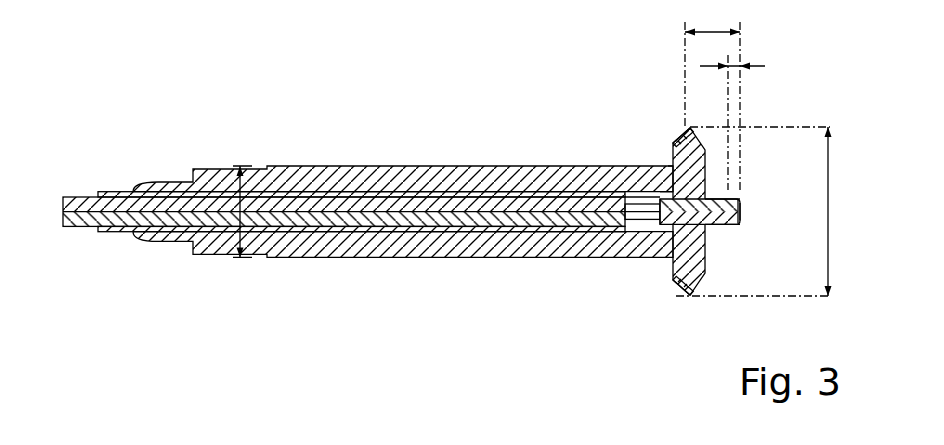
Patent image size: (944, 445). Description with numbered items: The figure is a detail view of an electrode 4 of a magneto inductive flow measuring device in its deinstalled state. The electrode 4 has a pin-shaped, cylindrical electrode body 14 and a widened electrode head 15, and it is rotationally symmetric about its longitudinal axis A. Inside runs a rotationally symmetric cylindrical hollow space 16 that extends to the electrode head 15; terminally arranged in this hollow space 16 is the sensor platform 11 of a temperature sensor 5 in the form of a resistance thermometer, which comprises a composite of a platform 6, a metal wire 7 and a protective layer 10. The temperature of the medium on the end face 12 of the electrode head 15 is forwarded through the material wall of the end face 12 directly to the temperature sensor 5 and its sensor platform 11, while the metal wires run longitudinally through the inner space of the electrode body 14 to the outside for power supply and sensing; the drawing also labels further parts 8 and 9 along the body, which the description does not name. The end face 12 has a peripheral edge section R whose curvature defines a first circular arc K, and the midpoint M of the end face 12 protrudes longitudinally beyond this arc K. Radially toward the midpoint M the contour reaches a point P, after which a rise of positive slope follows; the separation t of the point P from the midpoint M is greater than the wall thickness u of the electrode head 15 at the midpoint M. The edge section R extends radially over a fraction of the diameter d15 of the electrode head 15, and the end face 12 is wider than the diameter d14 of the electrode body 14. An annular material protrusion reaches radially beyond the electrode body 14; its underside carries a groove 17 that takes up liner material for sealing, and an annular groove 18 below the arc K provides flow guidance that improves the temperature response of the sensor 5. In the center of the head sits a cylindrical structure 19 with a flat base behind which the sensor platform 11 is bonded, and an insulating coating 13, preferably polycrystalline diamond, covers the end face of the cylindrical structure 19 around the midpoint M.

The electrode 4 is at (448, 164).
The temperature sensor 5 is at (368, 211).
The platform 6 is at (742, 229).
The metal wire 7 is at (732, 192).
The inner tube 8 is at (372, 229).
The rod / inner conductor 9 is at (321, 209).
The protective layer 10 is at (660, 213).
The sensor platform 11 is at (640, 220).
The end face 12 is at (746, 193).
The insulating coating 13 is at (748, 226).
The electrode body 14 is at (508, 173).
The electrode head 15 is at (681, 134).
The hollow space 16 is at (645, 196).
The groove 17 is at (670, 160).
The annular groove 18 is at (668, 193).
The cylindrical structure 19 is at (745, 190).
The longitudinal axis A is at (62, 209).
The edge section R is at (701, 139).
The separation t is at (712, 20).
The wall thickness u is at (732, 55).
The midpoint M is at (748, 210).
The first circular arc K is at (708, 241).
The point P is at (673, 237).
The diameter of the electrode body d14 is at (238, 213).
The diameter of the electrode head d15 is at (845, 211).